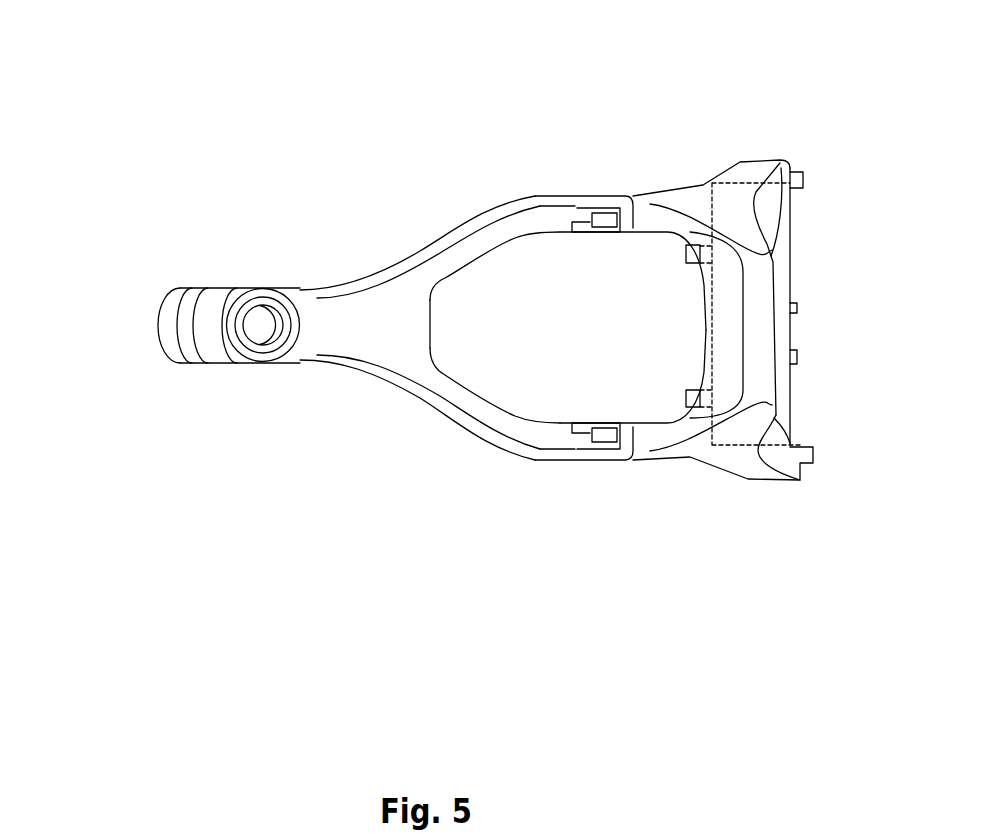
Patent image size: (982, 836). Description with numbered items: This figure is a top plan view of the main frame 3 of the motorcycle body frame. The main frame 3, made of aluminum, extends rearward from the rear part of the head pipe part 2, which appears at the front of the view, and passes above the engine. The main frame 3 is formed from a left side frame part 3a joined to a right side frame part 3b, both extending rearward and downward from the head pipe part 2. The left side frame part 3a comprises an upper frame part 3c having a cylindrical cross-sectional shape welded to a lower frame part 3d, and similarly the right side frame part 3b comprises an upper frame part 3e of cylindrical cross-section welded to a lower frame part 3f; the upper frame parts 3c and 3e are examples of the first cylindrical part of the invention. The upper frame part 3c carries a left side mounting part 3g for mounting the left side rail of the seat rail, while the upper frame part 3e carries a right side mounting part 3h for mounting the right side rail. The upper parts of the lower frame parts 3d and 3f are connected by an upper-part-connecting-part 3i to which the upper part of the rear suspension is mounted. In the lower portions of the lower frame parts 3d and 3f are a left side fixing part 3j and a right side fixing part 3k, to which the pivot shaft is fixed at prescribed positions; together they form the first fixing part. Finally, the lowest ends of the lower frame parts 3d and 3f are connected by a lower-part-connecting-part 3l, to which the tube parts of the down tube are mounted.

The head pipe part 2 is at (160, 327).
The main frame 3 is at (355, 316).
The left side frame part 3a is at (653, 471).
The right side frame part 3b is at (651, 175).
The upper frame part 3c is at (537, 460).
The lower frame part 3d is at (717, 455).
The upper frame part 3e is at (530, 222).
The lower frame part 3f is at (700, 184).
The left side mounting part 3g is at (607, 430).
The right side mounting part 3h is at (605, 224).
The upper-part-connecting-part 3i is at (765, 285).
The left side fixing part 3j is at (767, 468).
The right side fixing part 3k is at (754, 168).
The lower-part-connecting-part 3l is at (700, 285).